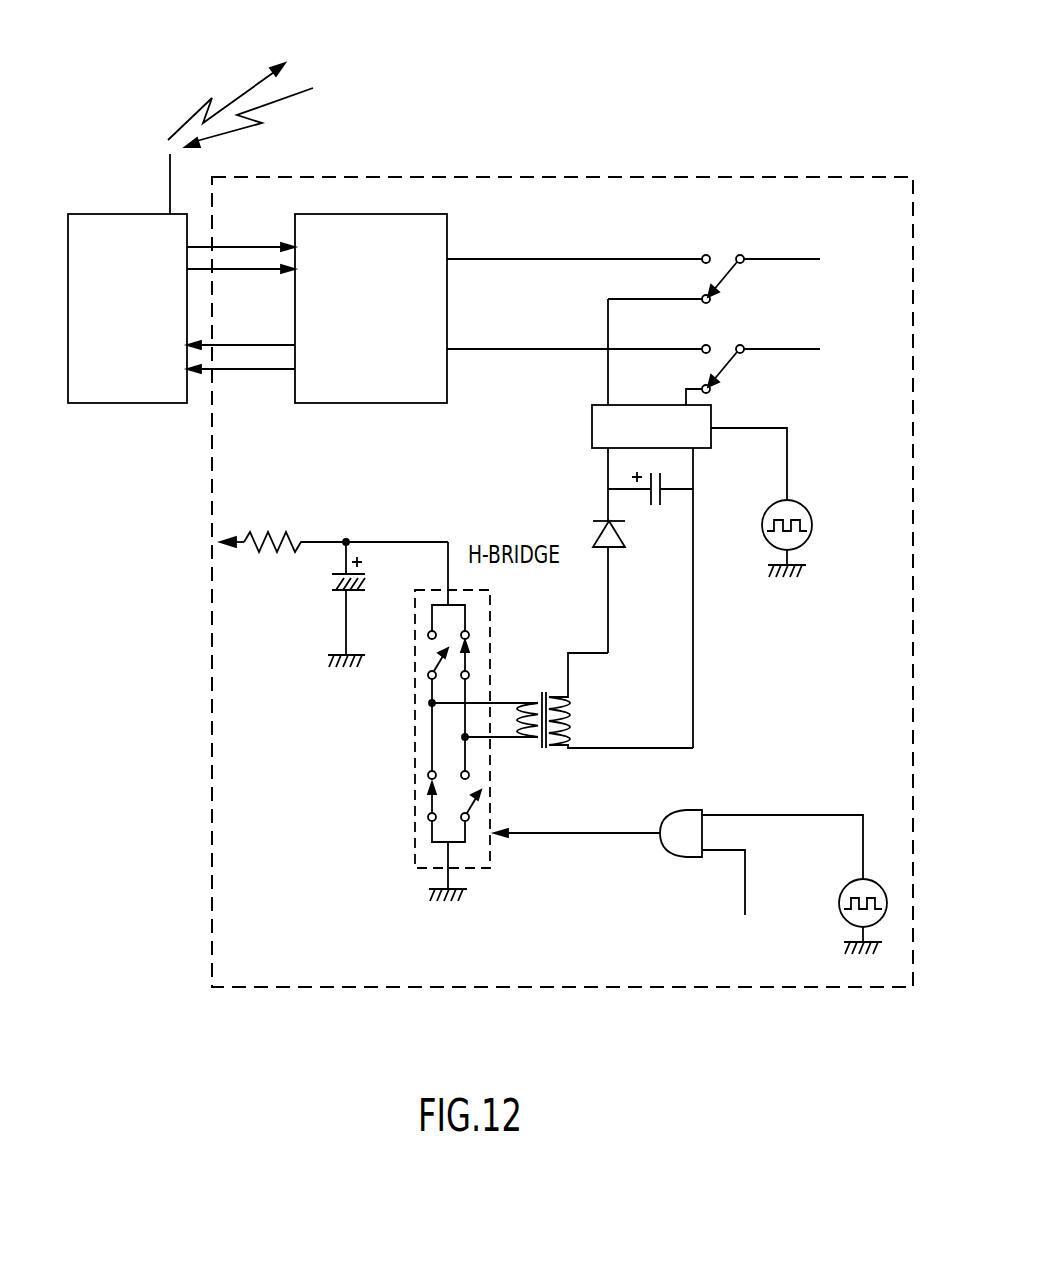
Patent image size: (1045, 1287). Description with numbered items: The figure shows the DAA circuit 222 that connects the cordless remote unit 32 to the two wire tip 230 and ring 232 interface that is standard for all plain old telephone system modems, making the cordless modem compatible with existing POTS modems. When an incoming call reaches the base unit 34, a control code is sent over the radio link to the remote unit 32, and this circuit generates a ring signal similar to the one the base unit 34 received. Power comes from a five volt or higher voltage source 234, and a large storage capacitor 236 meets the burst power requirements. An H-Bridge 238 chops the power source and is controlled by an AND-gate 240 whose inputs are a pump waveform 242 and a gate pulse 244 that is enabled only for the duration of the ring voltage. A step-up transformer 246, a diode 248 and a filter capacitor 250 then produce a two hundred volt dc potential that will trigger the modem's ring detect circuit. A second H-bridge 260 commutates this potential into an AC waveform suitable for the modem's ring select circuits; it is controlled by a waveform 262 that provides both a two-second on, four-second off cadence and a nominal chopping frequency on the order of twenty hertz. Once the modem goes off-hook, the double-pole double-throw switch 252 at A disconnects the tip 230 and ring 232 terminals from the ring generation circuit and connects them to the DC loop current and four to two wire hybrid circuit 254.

The cordless remote unit 32 is at (122, 214).
The base unit 34 is at (310, 90).
The DAA circuit 222 is at (583, 99).
The tip 230 is at (767, 257).
The ring 232 is at (770, 352).
The voltage source 234 is at (222, 546).
The storage capacitor 236 is at (330, 586).
The H-Bridge 238 is at (416, 796).
The AND-gate 240 is at (688, 809).
The pump waveform 242 is at (863, 870).
The gate pulse 244 is at (745, 909).
The step-up transformer 246 is at (541, 691).
The diode 248 is at (596, 530).
The filter capacitor 250 is at (662, 486).
The DPDT switch 252 is at (728, 268).
The DC loop current and 4 to 2 wire hybrid circuit 254 is at (447, 246).
The second H-bridge 260 is at (590, 430).
The waveform 262 is at (808, 513).